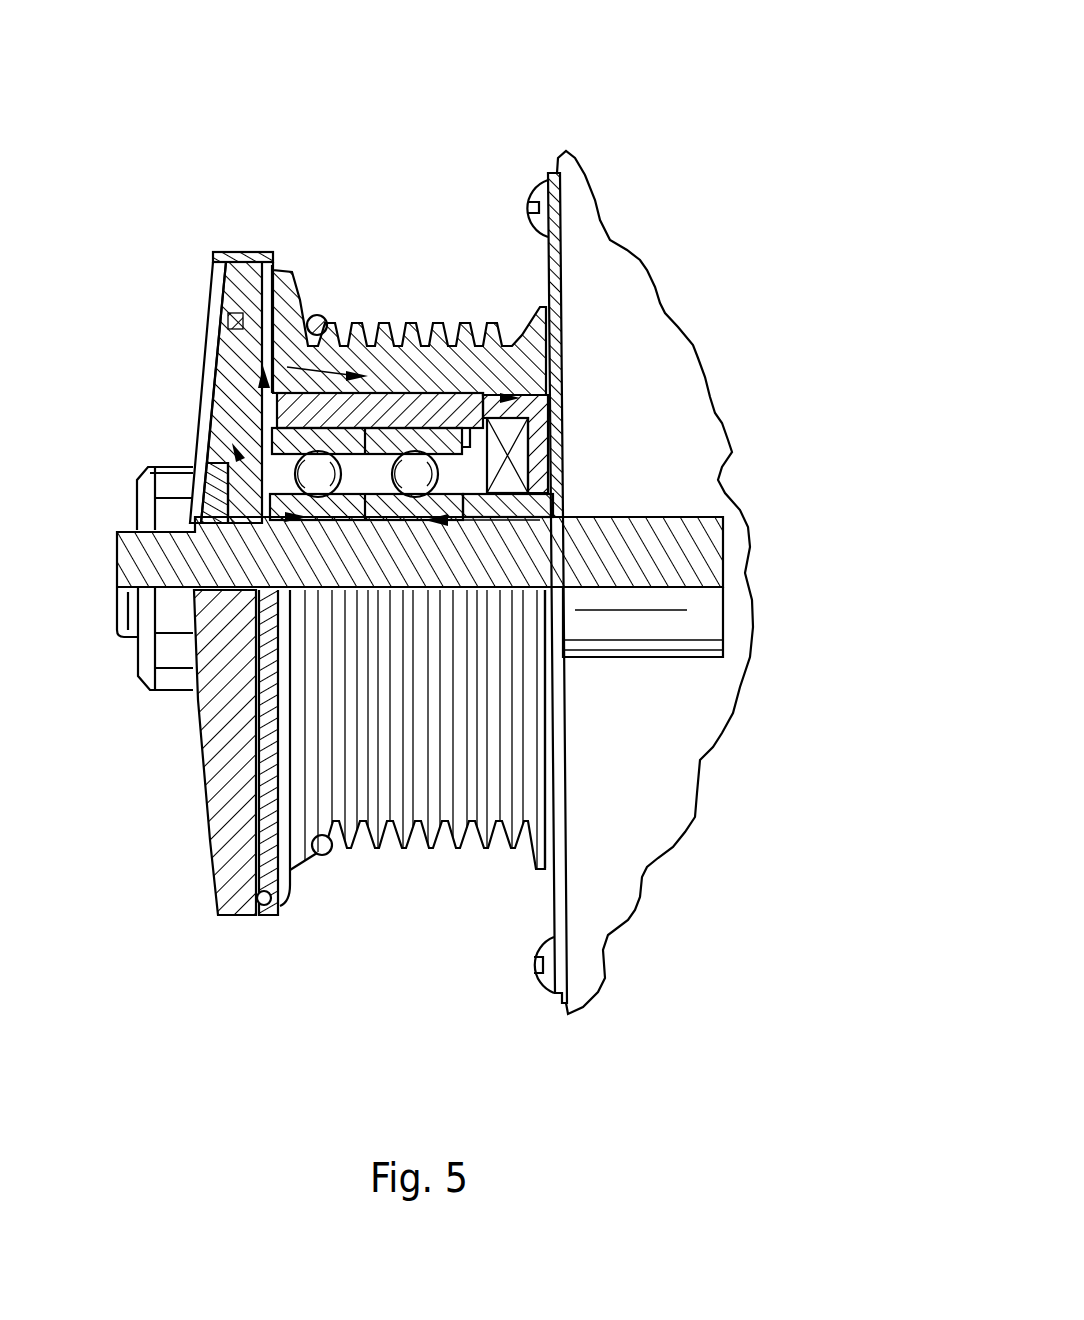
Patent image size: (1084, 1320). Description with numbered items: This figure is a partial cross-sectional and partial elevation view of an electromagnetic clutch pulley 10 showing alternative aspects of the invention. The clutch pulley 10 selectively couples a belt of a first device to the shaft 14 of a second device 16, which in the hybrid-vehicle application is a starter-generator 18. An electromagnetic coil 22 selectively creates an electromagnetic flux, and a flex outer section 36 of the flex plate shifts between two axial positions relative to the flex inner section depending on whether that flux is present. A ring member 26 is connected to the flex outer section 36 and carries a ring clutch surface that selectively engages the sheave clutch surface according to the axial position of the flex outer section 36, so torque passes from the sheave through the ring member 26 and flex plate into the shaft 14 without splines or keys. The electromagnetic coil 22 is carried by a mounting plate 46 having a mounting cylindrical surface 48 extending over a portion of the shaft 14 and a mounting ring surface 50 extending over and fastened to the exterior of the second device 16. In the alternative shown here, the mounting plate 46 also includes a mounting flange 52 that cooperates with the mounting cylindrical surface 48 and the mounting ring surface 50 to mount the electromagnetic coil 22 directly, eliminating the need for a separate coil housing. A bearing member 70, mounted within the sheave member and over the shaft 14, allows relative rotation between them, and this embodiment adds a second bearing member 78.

The clutch pulley 10 is at (546, 122).
The shaft 14 is at (693, 563).
The second device 16 is at (615, 784).
The starter-generator 18 is at (672, 831).
The electromagnetic coil 22 is at (520, 452).
The ring member 26 is at (237, 352).
The flex outer section 36 is at (225, 303).
The mounting plate 46 is at (560, 737).
The mounting cylindrical surface 48 is at (535, 509).
The mounting ring surface 50 is at (560, 260).
The mounting flange 52 is at (483, 393).
The bearing member 70 is at (410, 467).
The second bearing member 78 is at (300, 460).